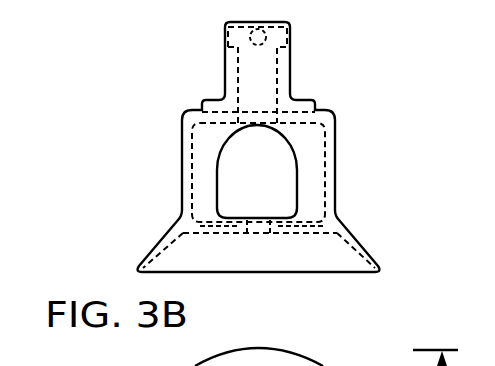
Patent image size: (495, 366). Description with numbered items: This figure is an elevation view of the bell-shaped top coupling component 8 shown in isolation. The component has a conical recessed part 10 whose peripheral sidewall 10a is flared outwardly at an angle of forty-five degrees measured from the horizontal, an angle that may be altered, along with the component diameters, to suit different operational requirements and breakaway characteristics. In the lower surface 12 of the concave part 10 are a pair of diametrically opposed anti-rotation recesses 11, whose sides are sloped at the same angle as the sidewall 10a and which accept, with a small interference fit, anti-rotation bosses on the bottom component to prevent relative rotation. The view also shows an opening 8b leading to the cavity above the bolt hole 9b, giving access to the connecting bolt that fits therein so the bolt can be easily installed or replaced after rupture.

The top coupling component 8 is at (350, 190).
The opening 8b is at (295, 142).
The bolt hole 9b is at (260, 218).
The conical recessed part 10 is at (330, 262).
The peripheral sidewall 10a is at (352, 241).
The anti-rotation recesses 11 is at (200, 230).
The lower surface 12 is at (240, 233).